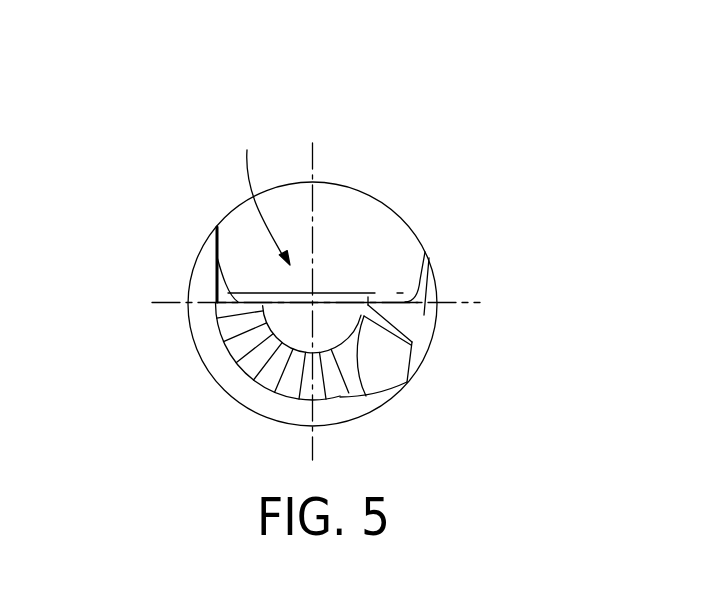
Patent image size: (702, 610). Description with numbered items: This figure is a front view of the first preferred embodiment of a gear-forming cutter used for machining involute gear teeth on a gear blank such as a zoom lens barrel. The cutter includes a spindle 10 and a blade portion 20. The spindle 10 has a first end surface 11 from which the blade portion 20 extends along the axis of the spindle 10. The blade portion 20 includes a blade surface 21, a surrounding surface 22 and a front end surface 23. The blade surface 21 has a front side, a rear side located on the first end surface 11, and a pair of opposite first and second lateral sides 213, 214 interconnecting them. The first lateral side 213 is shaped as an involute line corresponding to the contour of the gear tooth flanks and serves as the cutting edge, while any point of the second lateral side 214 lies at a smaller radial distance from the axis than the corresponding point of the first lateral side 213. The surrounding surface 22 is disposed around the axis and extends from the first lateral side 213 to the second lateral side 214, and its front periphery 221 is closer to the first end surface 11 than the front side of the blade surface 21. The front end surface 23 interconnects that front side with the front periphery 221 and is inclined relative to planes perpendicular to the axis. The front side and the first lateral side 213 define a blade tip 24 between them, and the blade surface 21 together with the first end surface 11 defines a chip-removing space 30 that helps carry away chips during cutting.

The spindle 10 is at (190, 360).
The first end surface 11 is at (340, 202).
The blade portion 20 is at (250, 400).
The blade surface 21 is at (382, 223).
The first lateral side 213 is at (387, 303).
The second lateral side 214 is at (218, 282).
The surrounding surface 22 is at (421, 372).
The front periphery 221 is at (360, 393).
The front end surface 23 is at (257, 358).
The blade tip 24 is at (424, 315).
The chip-removing space 30 is at (261, 190).